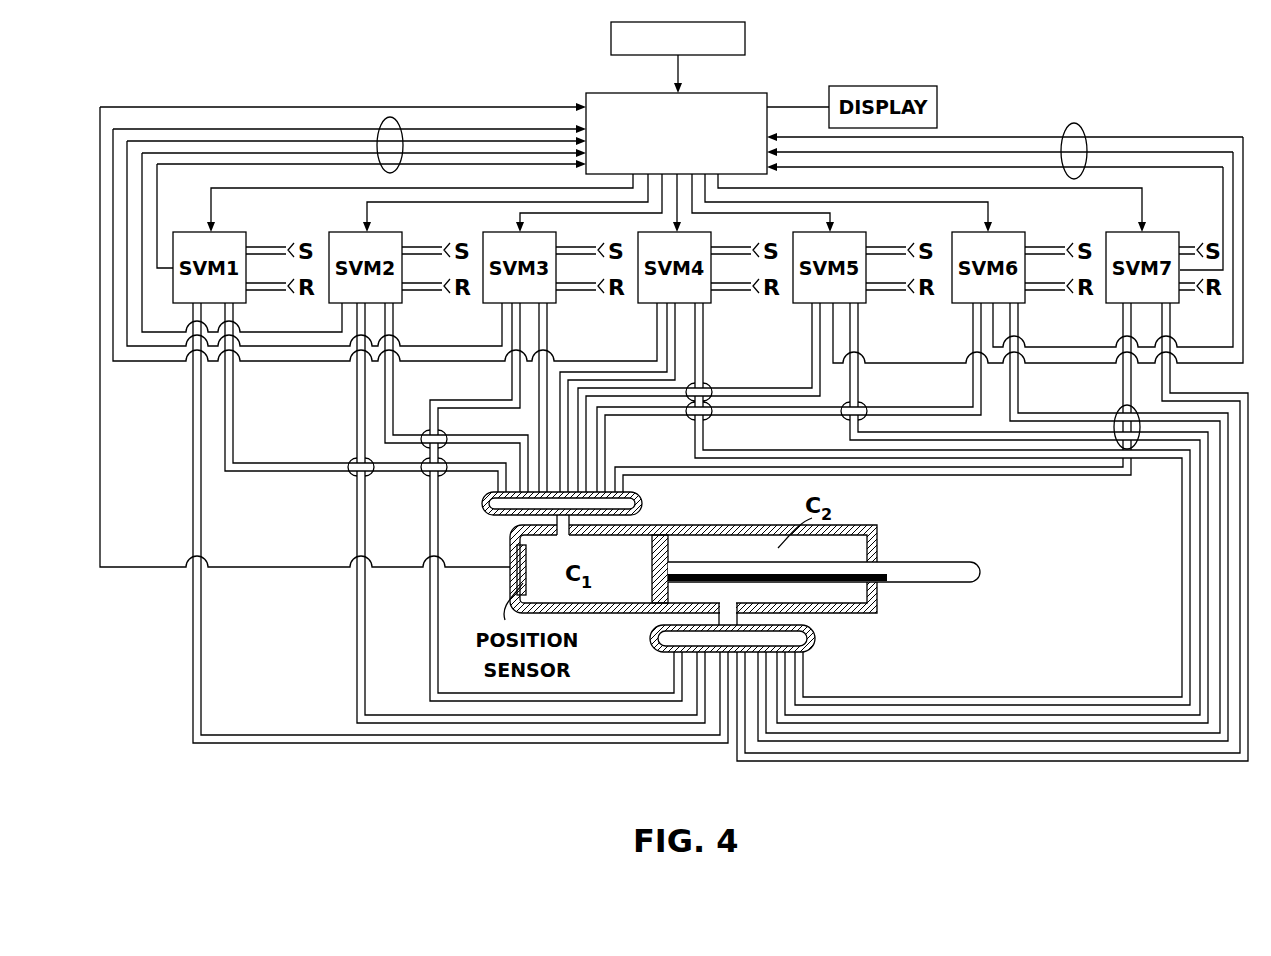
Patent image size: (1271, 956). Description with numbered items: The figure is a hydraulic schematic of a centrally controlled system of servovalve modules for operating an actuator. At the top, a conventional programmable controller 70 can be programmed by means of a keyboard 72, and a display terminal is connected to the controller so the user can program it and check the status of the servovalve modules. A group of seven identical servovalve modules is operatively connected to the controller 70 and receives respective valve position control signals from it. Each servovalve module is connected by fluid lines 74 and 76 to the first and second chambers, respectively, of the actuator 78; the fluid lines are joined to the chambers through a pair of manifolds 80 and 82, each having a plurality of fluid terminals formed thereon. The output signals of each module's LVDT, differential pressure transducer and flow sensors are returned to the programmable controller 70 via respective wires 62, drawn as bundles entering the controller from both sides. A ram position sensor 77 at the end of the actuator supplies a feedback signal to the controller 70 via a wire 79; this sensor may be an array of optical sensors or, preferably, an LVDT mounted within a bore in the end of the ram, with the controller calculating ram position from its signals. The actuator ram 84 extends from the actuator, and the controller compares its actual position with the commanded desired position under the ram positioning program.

The wires 62 is at (392, 117).
The programmable controller 70 is at (594, 93).
The keyboard 72 is at (745, 46).
The fluid line 74 is at (289, 463).
The fluid line 76 is at (191, 395).
The ram position sensor 77 is at (517, 553).
The actuator 78 is at (873, 616).
The wire 79 is at (140, 567).
The manifold 80 is at (645, 505).
The manifold 82 is at (818, 644).
The actuator ram 84 is at (938, 561).